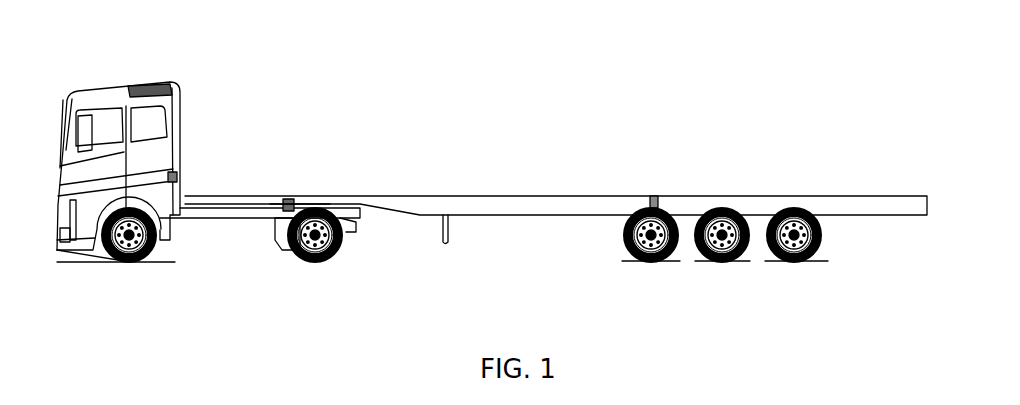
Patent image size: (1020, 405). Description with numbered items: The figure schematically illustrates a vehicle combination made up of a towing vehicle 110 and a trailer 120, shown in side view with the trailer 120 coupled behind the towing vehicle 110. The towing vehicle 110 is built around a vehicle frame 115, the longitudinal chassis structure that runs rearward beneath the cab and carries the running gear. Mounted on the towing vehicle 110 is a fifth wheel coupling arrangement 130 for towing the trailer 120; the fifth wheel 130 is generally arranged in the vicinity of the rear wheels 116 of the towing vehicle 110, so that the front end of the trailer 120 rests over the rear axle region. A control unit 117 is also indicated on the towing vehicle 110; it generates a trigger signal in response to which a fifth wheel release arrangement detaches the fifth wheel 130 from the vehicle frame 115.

The towing vehicle 110 is at (216, 64).
The vehicle frame 115 is at (216, 218).
The rear wheels 116 is at (330, 258).
The control unit 117 is at (174, 177).
The trailer 120 is at (533, 207).
The fifth wheel coupling arrangement 130 is at (300, 200).